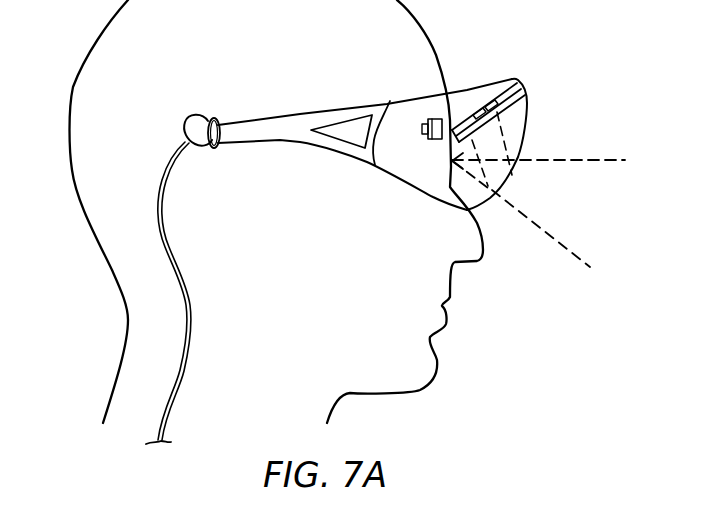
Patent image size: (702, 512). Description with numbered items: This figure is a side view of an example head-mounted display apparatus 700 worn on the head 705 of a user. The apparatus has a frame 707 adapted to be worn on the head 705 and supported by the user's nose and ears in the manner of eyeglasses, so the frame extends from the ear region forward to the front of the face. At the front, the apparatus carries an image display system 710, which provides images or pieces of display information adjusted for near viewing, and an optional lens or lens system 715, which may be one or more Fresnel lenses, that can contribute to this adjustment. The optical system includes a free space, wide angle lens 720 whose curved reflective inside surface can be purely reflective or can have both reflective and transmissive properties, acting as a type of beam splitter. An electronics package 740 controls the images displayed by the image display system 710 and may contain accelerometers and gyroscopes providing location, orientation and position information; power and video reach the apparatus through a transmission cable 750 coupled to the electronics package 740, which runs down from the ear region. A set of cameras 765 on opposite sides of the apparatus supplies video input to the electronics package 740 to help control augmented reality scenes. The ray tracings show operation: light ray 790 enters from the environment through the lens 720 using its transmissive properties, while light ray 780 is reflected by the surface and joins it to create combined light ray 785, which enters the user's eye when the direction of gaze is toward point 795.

The HMD apparatus 700 is at (517, 80).
The head 705 is at (92, 43).
The frame 707 is at (314, 115).
The image display system 710 is at (526, 102).
The lens system 715 is at (524, 118).
The lens 720 is at (518, 138).
The electronics package 740 is at (490, 102).
The transmission cable 750 is at (173, 242).
The cameras 765 is at (422, 130).
The light ray 780 is at (454, 162).
The combined light ray 785 is at (450, 190).
The light ray 790 is at (567, 249).
The point 795 is at (492, 188).